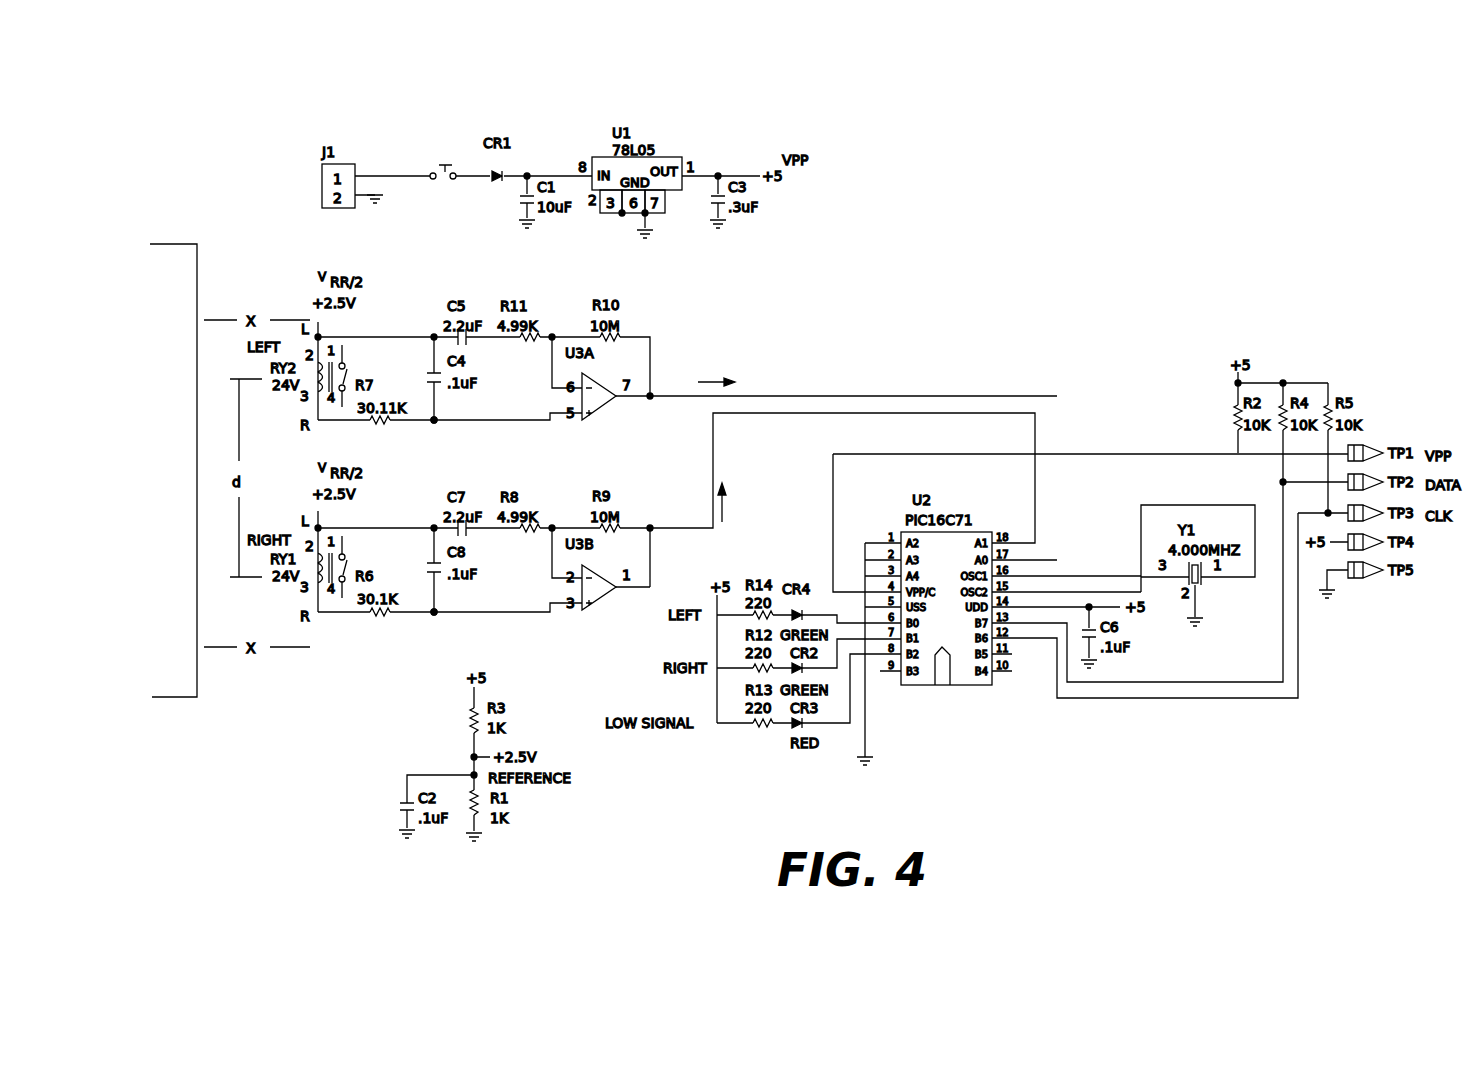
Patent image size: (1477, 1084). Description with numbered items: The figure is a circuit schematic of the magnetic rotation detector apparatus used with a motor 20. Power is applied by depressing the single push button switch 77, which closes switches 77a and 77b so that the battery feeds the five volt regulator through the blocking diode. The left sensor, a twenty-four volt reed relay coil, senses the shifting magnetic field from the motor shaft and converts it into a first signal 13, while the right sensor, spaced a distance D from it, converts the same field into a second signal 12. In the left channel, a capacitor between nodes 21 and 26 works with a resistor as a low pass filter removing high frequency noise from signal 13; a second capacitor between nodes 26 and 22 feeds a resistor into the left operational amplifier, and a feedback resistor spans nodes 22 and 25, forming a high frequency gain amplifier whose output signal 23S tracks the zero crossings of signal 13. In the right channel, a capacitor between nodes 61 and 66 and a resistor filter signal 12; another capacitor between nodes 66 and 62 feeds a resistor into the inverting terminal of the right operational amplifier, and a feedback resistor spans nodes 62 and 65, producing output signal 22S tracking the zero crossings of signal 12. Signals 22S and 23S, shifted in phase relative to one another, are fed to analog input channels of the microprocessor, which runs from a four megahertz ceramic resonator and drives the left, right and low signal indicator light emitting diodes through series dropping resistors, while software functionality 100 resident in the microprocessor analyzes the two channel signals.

The motor 20 is at (172, 243).
The push button switch 77 is at (434, 157).
The switch 77a is at (350, 375).
The switch 77b is at (350, 566).
The first signal 13 is at (337, 391).
The second signal 12 is at (363, 625).
The node 26 is at (434, 336).
The node 21 is at (434, 421).
The node 22 is at (556, 330).
The node 25 is at (652, 395).
The signal 23S is at (735, 383).
The node 66 is at (434, 527).
The node 61 is at (434, 613).
The node 62 is at (556, 521).
The node 65 is at (652, 527).
The signal 22S is at (733, 490).
The software functionality 100 is at (948, 672).